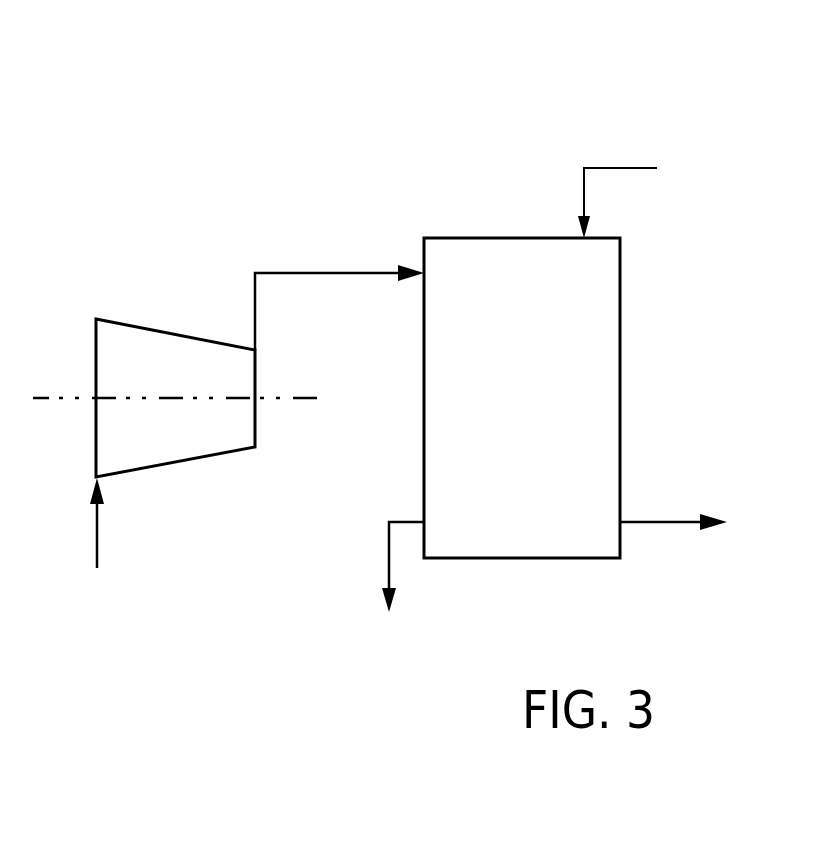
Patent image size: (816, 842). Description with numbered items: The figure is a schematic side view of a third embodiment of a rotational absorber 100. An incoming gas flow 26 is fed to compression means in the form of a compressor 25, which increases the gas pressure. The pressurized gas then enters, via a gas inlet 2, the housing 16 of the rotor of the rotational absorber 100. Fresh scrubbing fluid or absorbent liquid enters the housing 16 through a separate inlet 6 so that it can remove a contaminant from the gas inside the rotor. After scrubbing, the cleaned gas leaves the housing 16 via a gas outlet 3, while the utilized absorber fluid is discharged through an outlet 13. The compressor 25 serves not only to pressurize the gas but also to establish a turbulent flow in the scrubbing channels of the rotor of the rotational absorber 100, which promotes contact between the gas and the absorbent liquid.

The rotational absorber 100 is at (200, 156).
The compressor 25 is at (176, 398).
The incoming gas flow 26 is at (125, 523).
The gas inlet 2 is at (339, 289).
The housing 16 is at (522, 398).
The inlet 6 is at (617, 174).
The gas outlet 3 is at (691, 524).
The outlet 13 is at (416, 579).